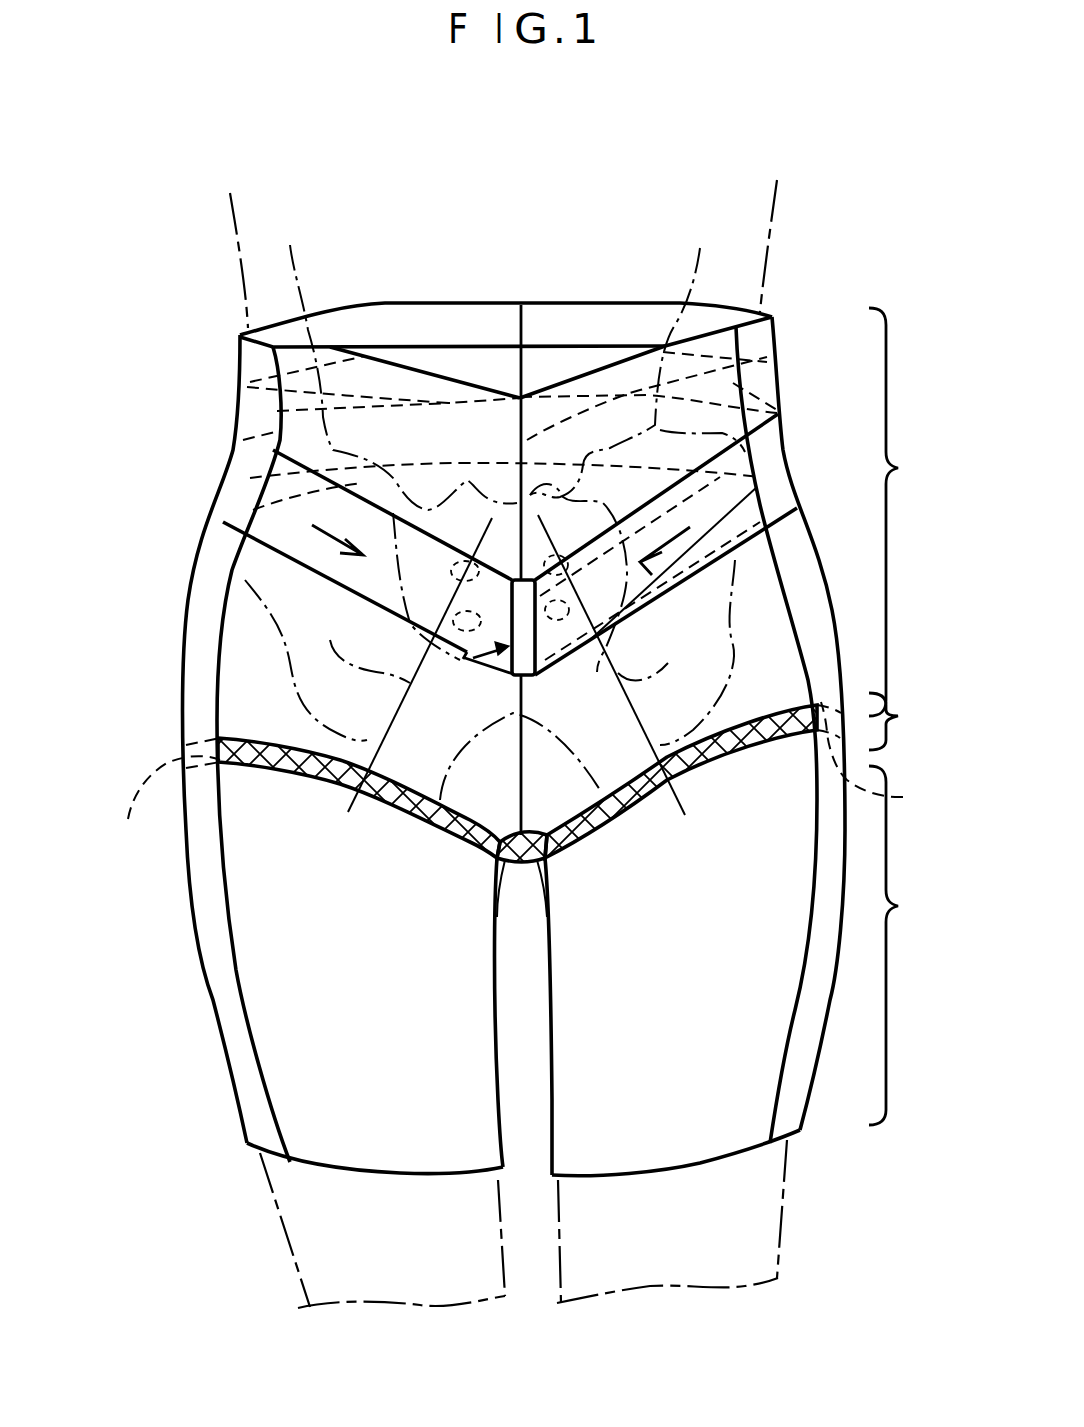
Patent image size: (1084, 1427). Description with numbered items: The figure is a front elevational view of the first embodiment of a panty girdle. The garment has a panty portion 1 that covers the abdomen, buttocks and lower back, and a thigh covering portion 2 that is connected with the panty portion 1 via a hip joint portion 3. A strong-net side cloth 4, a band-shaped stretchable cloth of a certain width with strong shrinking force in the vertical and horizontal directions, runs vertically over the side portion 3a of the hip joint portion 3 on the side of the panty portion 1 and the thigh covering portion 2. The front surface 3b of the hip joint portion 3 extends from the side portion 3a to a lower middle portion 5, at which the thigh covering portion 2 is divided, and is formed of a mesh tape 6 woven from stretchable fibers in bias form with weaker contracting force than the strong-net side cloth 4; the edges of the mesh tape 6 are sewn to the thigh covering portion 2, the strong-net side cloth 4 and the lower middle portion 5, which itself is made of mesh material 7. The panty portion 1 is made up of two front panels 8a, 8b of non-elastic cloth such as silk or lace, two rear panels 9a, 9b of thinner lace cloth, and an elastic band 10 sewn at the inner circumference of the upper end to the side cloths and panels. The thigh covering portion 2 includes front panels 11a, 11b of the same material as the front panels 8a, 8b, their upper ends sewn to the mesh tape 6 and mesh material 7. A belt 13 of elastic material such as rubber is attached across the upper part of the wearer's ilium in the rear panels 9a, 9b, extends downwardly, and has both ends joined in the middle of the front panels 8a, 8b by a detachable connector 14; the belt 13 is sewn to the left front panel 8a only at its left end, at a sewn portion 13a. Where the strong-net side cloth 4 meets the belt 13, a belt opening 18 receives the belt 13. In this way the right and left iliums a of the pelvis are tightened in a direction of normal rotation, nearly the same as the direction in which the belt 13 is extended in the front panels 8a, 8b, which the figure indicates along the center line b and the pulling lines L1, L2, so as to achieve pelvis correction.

The panty portion 1 is at (893, 512).
The thigh covering portion 2 is at (896, 945).
The hip joint portion 3 is at (893, 721).
The side portion 3a is at (523, 782).
The front surface 3b is at (330, 790).
The strong-net side cloth 4 is at (183, 648).
The lower middle portion 5 is at (543, 880).
The mesh tape 6 is at (270, 765).
The mesh material 7 is at (505, 893).
The front panel 8a is at (763, 652).
The front panel 8b is at (254, 702).
The rear panel 9a is at (570, 365).
The rear panel 9b is at (470, 360).
The elastic band 10 is at (369, 323).
The front panel 11a is at (708, 1138).
The front panel 11b is at (332, 1142).
The belt 13 is at (278, 540).
The sewn portion 13a is at (757, 487).
The detachable connector 14 is at (440, 746).
The belt opening 18 is at (262, 418).
The ilium a is at (509, 415).
The body center line b is at (480, 477).
The pulling line L1 is at (612, 665).
The pulling line L2 is at (398, 665).